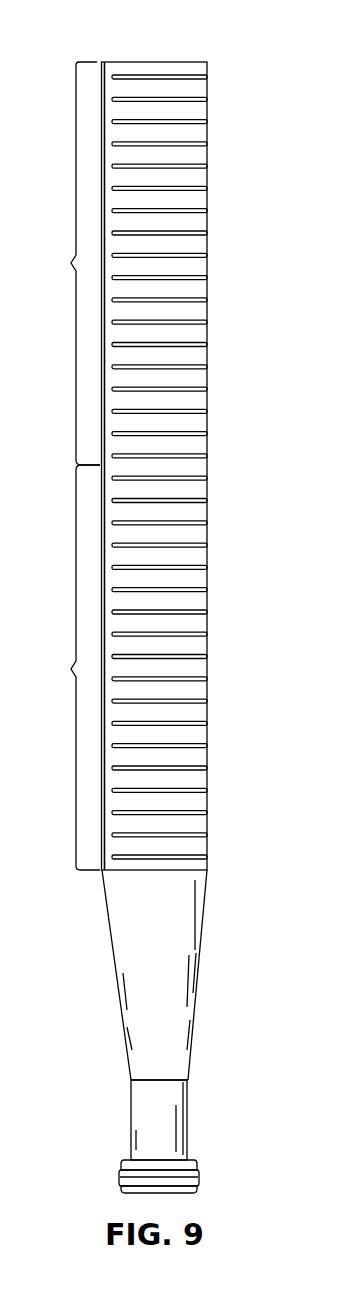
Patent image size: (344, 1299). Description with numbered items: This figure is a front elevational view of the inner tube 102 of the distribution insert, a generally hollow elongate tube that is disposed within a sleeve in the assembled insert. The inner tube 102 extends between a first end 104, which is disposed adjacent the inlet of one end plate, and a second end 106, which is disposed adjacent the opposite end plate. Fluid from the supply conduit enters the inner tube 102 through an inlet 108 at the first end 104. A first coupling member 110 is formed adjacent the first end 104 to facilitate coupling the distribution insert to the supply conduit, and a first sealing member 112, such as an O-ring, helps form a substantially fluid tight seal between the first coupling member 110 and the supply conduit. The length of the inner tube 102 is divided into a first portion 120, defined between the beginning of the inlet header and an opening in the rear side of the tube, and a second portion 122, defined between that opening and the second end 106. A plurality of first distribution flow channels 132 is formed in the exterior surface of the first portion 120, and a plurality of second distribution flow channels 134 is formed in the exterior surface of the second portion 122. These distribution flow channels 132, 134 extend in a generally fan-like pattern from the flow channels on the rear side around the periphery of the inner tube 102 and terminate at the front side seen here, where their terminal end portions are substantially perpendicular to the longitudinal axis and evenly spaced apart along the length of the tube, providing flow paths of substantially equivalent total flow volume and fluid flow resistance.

The inner tube 102 is at (228, 49).
The second end 106 is at (194, 68).
The second distribution flow channels 134 is at (132, 77).
The first distribution flow channels 132 is at (185, 858).
The second portion 122 is at (119, 242).
The first portion 120 is at (153, 685).
The first end 104 is at (189, 1117).
The inlet 108 is at (143, 1193).
The first coupling member 110 is at (196, 1162).
The first sealing member 112 is at (199, 1177).